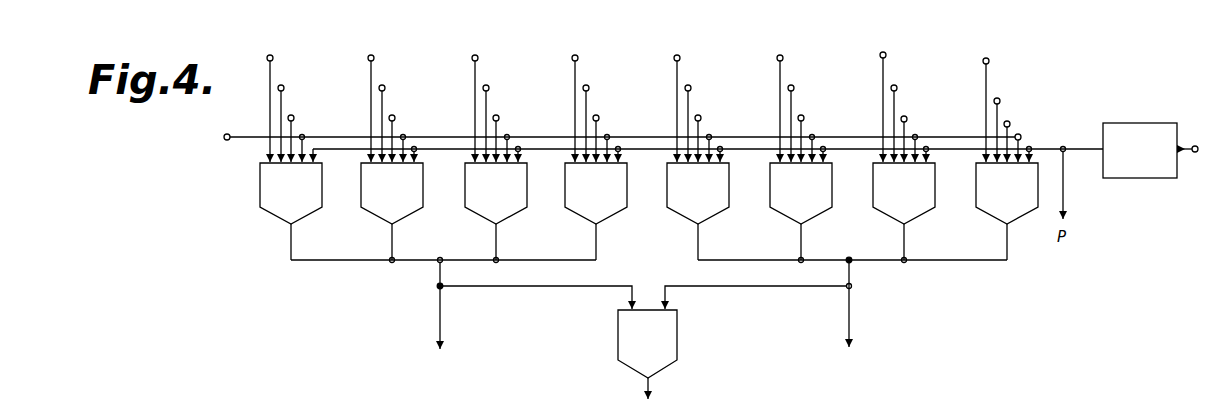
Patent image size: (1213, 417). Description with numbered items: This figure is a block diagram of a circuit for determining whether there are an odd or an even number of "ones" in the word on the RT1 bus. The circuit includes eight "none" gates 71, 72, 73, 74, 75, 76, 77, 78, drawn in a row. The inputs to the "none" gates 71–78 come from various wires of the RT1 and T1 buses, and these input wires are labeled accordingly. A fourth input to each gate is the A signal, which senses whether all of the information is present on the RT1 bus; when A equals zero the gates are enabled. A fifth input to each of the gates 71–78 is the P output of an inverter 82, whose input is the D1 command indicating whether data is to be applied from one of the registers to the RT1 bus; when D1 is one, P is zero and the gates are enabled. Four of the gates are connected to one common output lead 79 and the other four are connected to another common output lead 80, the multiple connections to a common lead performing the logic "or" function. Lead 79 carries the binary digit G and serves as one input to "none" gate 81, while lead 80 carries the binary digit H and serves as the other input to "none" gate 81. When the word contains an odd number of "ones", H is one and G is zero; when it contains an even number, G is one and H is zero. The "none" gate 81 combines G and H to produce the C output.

The none gate 71 is at (277, 218).
The none gate 72 is at (380, 218).
The none gate 73 is at (484, 218).
The none gate 74 is at (584, 218).
The none gate 75 is at (686, 218).
The none gate 76 is at (789, 218).
The none gate 77 is at (893, 218).
The none gate 78 is at (996, 218).
The common output lead 79 is at (438, 278).
The common output lead 80 is at (851, 278).
The none gate 81 is at (680, 335).
The inverter 82 is at (1143, 122).